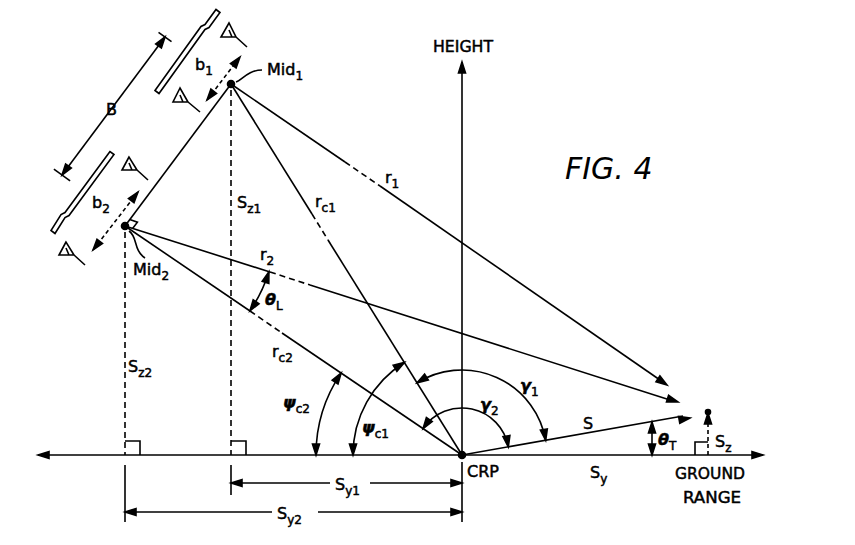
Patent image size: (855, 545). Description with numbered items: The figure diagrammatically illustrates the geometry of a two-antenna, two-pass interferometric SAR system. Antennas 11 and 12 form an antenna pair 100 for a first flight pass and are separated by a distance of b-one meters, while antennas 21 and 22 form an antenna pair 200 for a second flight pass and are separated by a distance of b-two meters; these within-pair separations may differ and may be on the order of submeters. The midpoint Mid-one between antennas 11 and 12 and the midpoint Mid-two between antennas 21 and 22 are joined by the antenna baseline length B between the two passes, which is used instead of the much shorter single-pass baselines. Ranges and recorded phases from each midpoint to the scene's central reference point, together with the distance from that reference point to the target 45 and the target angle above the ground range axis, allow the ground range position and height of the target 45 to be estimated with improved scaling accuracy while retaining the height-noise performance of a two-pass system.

The antenna pair for first flight pass 100 is at (187, 48).
The antenna pair for second flight pass 200 is at (72, 193).
The antenna 11 is at (186, 109).
The antenna 12 is at (244, 34).
The antenna 21 is at (72, 262).
The antenna 22 is at (143, 167).
The target 45 is at (712, 411).